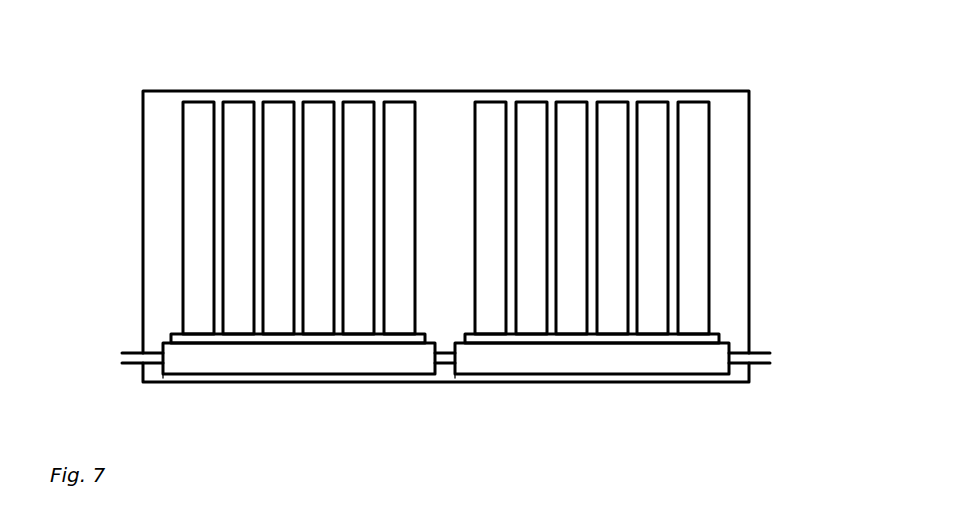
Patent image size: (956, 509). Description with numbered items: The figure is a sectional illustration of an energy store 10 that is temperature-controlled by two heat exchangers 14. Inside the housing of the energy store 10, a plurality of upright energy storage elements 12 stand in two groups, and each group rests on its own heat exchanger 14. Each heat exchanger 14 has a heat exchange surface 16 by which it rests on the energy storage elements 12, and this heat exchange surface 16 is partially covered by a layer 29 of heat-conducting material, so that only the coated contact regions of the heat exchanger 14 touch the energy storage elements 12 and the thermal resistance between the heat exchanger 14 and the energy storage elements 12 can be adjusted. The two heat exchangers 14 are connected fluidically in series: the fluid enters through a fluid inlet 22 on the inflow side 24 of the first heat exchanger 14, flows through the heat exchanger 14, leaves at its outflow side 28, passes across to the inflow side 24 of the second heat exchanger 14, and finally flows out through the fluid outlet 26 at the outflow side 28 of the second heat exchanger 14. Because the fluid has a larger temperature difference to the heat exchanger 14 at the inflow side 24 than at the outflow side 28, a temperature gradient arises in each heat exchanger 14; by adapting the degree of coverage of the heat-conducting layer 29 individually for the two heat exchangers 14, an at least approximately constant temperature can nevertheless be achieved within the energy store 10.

The energy store 10 is at (617, 75).
The energy storage elements 12 is at (200, 108).
The heat exchanger 14 is at (350, 363).
The heat exchange surface 16 is at (200, 343).
The fluid inlet 22 is at (125, 366).
The inflow side 24 is at (160, 373).
The fluid outlet 26 is at (770, 352).
The outflow side 28 is at (435, 365).
The heat-conducting layer 29 is at (278, 335).